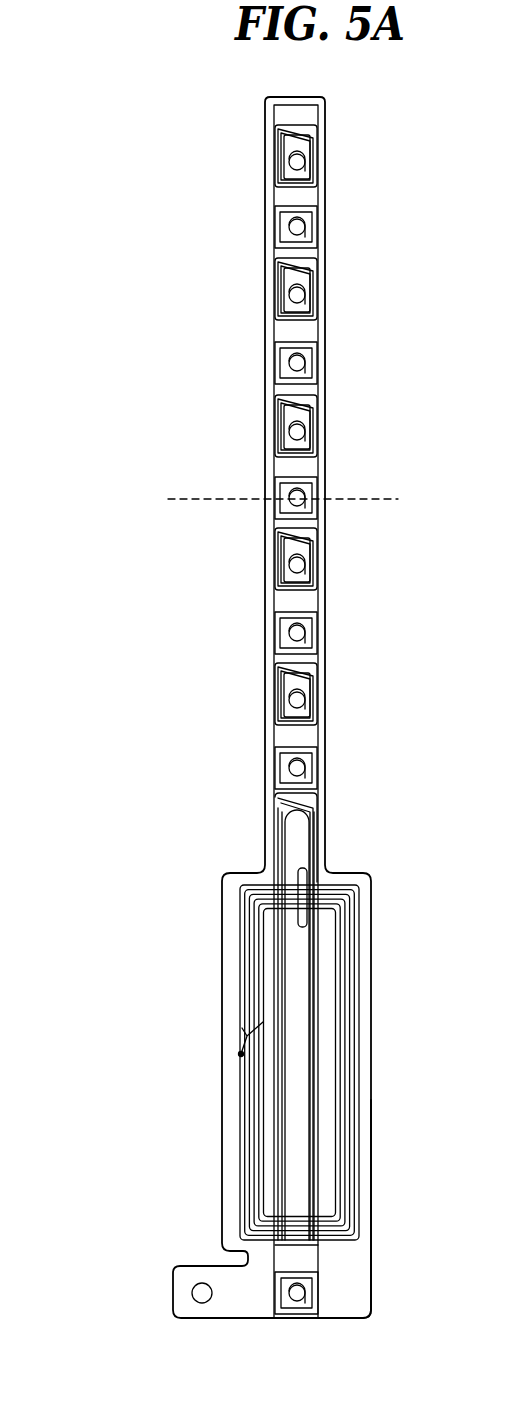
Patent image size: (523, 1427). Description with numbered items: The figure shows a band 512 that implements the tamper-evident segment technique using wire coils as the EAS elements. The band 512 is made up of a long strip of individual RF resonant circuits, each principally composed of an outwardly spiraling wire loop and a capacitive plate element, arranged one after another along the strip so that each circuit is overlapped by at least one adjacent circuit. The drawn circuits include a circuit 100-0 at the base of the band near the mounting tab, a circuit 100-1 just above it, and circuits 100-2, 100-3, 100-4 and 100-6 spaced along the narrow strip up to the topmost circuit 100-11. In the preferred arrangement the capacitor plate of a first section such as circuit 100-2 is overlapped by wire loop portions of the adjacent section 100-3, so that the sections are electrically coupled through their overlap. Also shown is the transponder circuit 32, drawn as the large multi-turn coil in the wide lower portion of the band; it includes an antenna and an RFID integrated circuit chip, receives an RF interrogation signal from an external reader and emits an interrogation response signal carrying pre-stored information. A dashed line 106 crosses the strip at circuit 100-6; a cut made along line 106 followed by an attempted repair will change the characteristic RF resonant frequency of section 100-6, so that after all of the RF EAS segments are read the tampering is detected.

The band 512 is at (155, 264).
The line 106 is at (261, 501).
The transponder circuit 32 is at (196, 1225).
The RF resonant circuit 100-0 is at (353, 1302).
The RF resonant circuit 100-1 is at (320, 1255).
The RF resonant circuit 100-2 is at (318, 777).
The RF resonant circuit 100-3 is at (318, 707).
The RF resonant circuit 100-4 is at (318, 627).
The RF resonant circuit 100-6 is at (318, 490).
The RF resonant circuit 100-11 is at (325, 167).